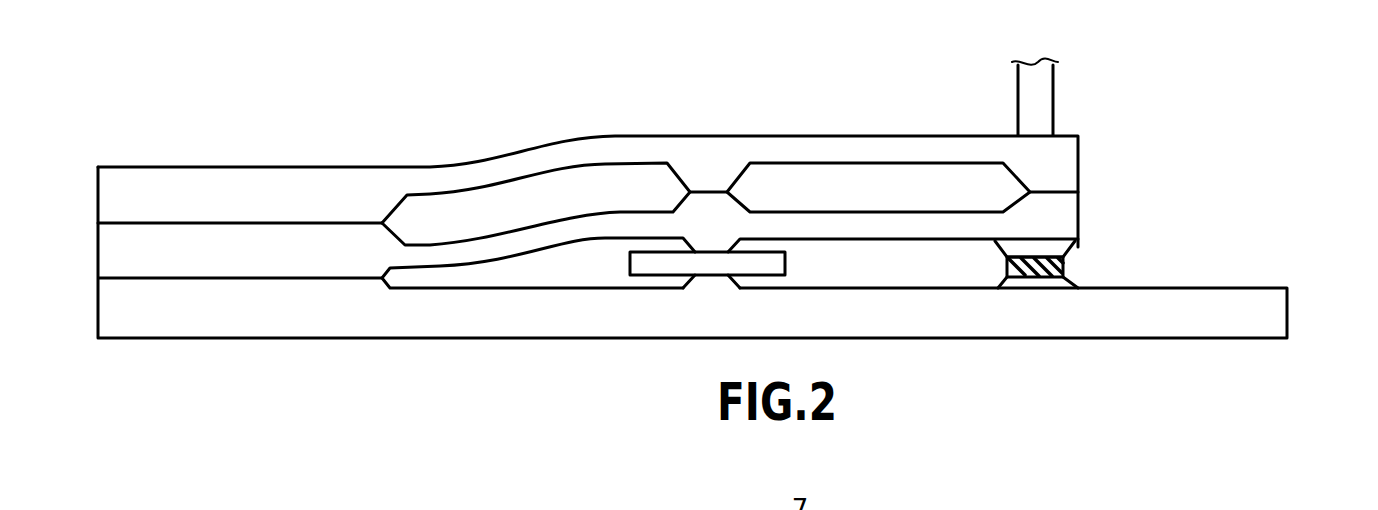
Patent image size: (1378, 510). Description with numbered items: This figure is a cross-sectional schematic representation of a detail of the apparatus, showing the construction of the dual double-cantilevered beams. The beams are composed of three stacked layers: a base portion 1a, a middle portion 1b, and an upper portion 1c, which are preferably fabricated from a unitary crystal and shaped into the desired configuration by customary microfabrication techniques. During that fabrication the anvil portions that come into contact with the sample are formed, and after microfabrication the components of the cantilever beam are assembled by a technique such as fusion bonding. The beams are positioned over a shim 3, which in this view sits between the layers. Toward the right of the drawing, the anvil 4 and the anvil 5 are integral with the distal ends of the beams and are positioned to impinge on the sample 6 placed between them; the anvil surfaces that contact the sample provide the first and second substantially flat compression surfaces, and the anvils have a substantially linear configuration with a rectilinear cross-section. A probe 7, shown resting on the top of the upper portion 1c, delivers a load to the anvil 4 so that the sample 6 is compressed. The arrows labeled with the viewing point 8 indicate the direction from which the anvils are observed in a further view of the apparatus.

The base portion 1a is at (692, 252).
The middle portion 1b is at (588, 255).
The upper portion 1c is at (588, 191).
The shim 3 is at (708, 263).
The anvil 4 is at (1080, 250).
The anvil 5 is at (1052, 280).
The sample 6 is at (1065, 270).
The probe 7 is at (1055, 88).
The viewing point 8 is at (1258, 119).